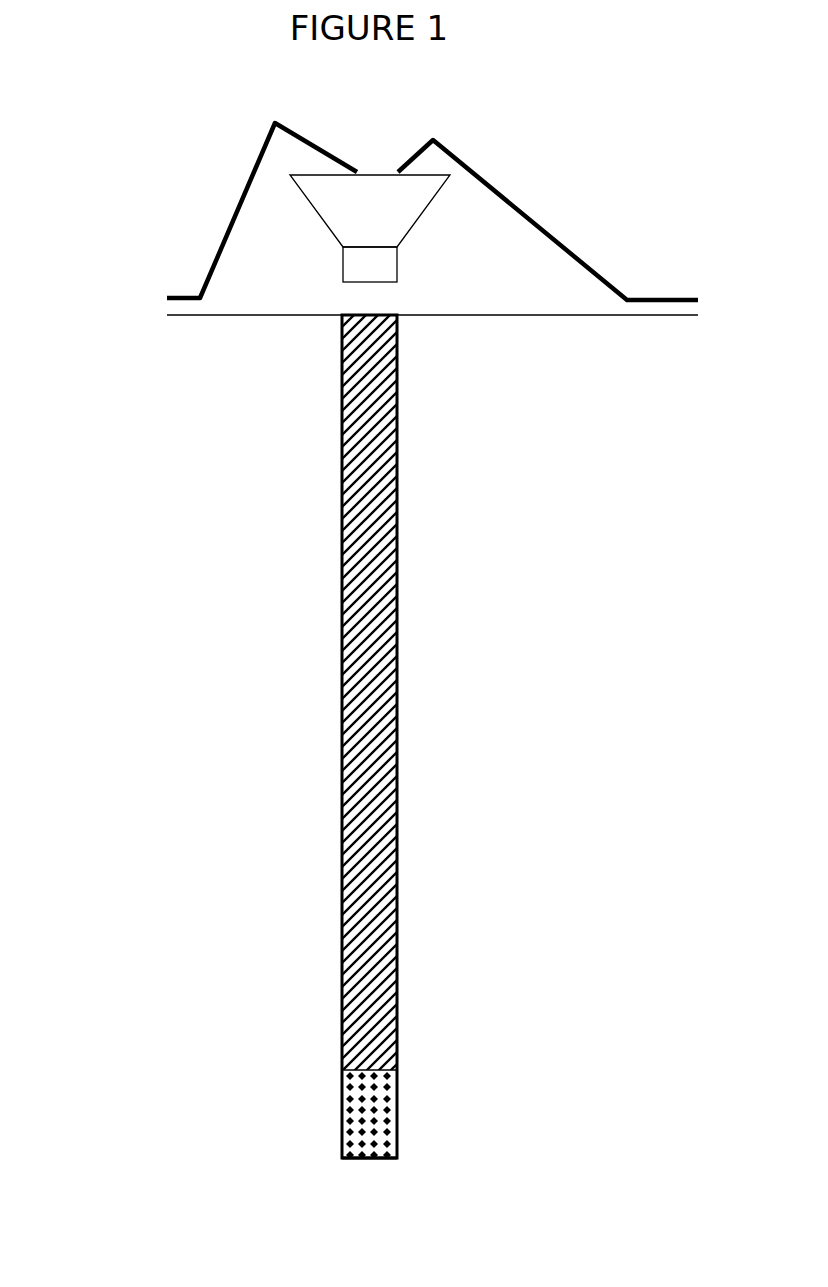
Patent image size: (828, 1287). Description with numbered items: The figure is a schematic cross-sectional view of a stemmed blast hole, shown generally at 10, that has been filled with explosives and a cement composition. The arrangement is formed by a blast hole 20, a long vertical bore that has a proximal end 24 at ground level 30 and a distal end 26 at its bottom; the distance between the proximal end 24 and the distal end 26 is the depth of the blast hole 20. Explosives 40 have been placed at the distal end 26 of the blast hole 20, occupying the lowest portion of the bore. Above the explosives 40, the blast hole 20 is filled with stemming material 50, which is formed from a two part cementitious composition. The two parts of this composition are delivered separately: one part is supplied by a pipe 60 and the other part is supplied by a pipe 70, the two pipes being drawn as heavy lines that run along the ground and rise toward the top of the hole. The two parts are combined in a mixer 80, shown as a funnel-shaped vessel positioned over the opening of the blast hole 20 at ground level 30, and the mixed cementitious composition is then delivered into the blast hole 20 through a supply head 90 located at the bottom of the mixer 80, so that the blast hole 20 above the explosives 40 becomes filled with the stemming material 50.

The stemmed blast hole 10 is at (253, 615).
The blast hole 20 is at (390, 715).
The proximal end 24 is at (343, 337).
The distal end 26 is at (347, 1145).
The ground level 30 is at (253, 315).
The explosives 40 is at (365, 1128).
The stemming material 50 is at (360, 597).
The pipe 60 is at (220, 248).
The pipe 70 is at (543, 227).
The mixer 80 is at (380, 212).
The supply head 90 is at (397, 282).